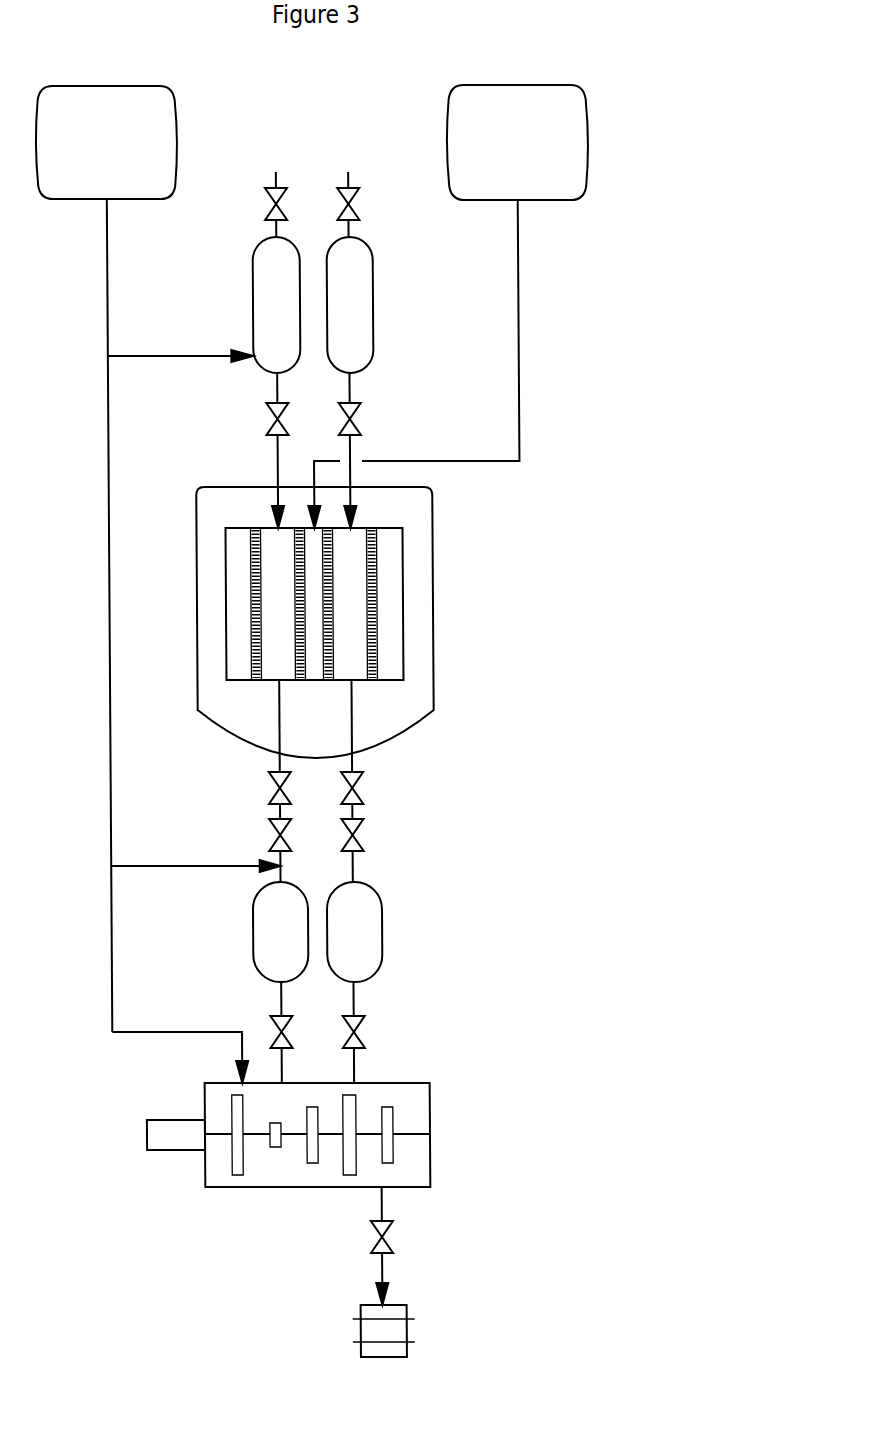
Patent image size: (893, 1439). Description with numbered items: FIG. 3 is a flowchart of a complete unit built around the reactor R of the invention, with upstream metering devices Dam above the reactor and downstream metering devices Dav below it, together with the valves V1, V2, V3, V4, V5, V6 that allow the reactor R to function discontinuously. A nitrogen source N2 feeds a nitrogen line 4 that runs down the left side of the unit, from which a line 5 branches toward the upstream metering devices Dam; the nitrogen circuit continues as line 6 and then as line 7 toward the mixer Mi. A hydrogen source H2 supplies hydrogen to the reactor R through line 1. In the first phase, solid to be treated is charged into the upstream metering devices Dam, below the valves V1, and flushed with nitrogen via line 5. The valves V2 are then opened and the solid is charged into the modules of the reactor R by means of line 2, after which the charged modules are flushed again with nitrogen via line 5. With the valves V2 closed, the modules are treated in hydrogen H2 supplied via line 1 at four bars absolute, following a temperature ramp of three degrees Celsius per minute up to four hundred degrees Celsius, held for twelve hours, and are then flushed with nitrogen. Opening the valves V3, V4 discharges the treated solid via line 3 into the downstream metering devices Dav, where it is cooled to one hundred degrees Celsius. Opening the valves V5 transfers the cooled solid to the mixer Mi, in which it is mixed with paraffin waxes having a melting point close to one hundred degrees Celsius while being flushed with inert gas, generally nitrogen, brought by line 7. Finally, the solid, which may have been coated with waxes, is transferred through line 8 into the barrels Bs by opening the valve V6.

The hydrogen supply line 1 is at (518, 305).
The charging line 2 is at (350, 392).
The discharge line 3 is at (350, 753).
The nitrogen line 4 is at (106, 305).
The nitrogen flushing line 5 is at (148, 358).
The nitrogen line 6 is at (105, 577).
The nitrogen line to mixer 7 is at (103, 948).
The barrel transfer line 8 is at (374, 1268).
The nitrogen N2 is at (107, 142).
The hydrogen H2 is at (518, 142).
The valve V1 is at (367, 204).
The valve V2 is at (368, 454).
The valve V3 is at (372, 795).
The valve V4 is at (372, 850).
The valve V5 is at (372, 1032).
The valve V6 is at (400, 1220).
The upstream metering device Dam is at (251, 305).
The downstream metering device Dav is at (247, 932).
The reactor R is at (428, 677).
The mixer Mi is at (423, 1108).
The barrels Bs is at (398, 1307).